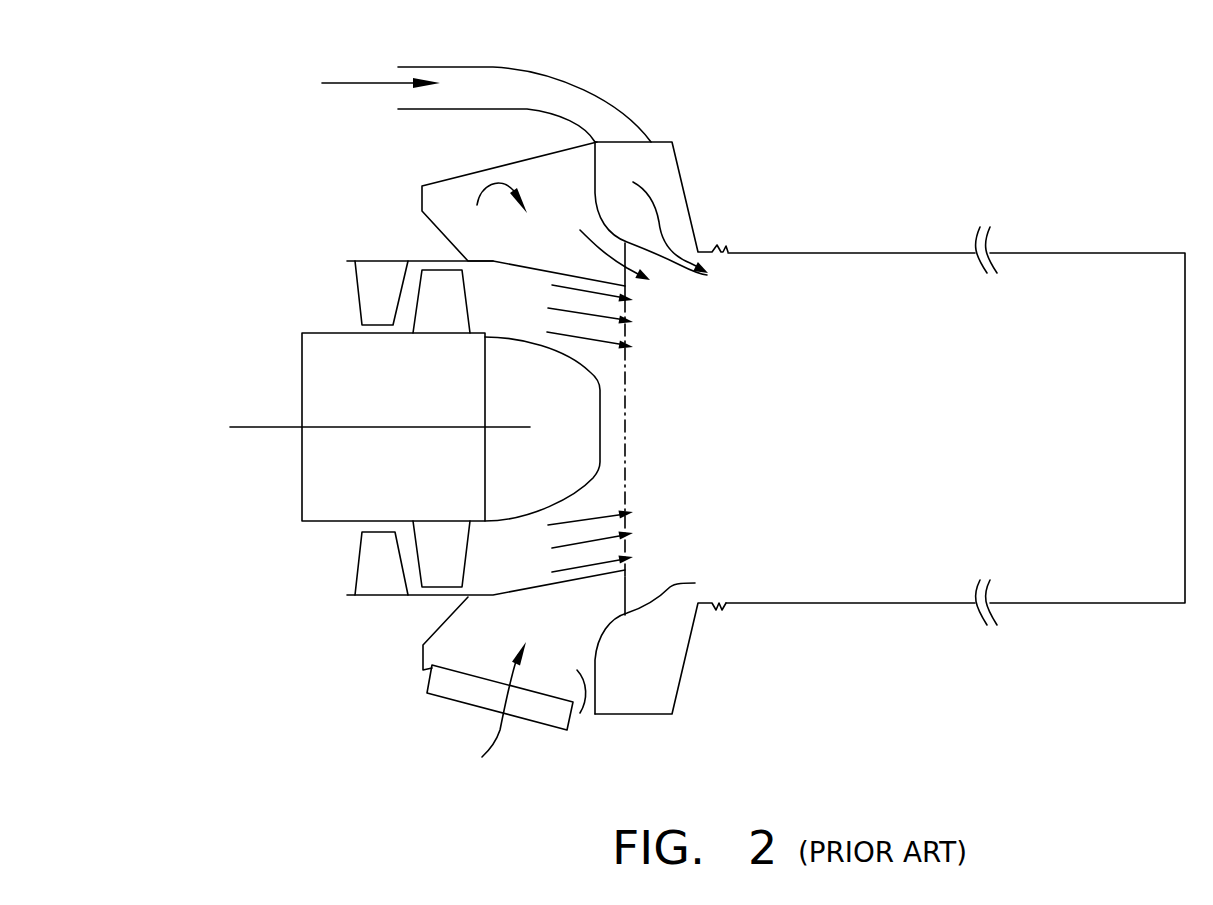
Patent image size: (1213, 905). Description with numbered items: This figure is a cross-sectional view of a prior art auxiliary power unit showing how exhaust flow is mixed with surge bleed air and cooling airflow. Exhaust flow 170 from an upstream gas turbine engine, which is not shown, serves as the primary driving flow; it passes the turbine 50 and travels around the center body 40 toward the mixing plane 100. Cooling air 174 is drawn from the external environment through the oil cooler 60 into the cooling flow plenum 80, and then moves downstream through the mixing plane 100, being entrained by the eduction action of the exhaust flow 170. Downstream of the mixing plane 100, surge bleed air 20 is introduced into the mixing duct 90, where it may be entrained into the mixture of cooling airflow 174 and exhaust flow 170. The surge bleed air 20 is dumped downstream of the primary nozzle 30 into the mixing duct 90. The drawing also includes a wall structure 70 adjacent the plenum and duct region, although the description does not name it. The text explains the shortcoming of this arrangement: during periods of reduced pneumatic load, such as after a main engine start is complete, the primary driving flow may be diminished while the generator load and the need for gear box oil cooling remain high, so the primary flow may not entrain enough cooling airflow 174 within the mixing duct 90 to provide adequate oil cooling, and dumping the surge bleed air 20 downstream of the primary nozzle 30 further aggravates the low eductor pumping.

The surge bleed air 20 is at (358, 83).
The primary nozzle 30 is at (522, 262).
The center body 40 is at (520, 383).
The turbine 50 is at (432, 575).
The oil cooler 60 is at (448, 702).
The turbine nozzle housing 70 is at (657, 662).
The cooling flow plenum 80 is at (582, 716).
The mixing duct 90 is at (773, 292).
The mixing plane 100 is at (625, 425).
The exhaust flow 170 is at (577, 542).
The cooling air 174 is at (500, 727).